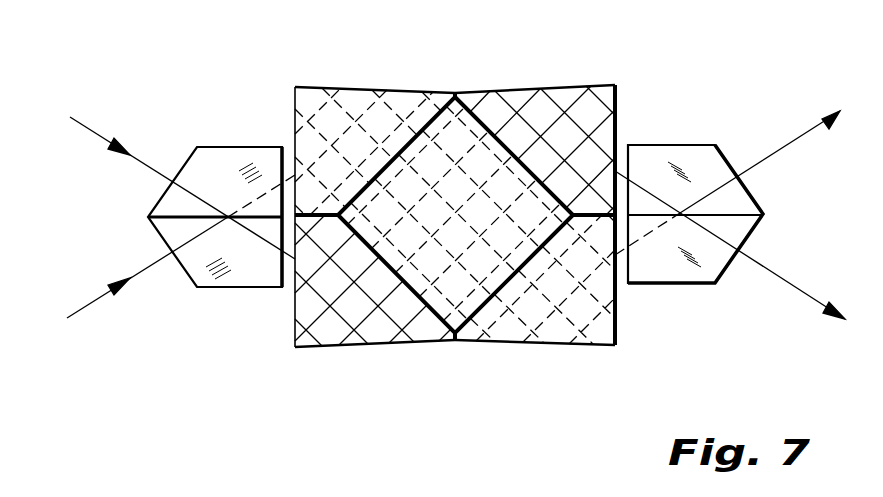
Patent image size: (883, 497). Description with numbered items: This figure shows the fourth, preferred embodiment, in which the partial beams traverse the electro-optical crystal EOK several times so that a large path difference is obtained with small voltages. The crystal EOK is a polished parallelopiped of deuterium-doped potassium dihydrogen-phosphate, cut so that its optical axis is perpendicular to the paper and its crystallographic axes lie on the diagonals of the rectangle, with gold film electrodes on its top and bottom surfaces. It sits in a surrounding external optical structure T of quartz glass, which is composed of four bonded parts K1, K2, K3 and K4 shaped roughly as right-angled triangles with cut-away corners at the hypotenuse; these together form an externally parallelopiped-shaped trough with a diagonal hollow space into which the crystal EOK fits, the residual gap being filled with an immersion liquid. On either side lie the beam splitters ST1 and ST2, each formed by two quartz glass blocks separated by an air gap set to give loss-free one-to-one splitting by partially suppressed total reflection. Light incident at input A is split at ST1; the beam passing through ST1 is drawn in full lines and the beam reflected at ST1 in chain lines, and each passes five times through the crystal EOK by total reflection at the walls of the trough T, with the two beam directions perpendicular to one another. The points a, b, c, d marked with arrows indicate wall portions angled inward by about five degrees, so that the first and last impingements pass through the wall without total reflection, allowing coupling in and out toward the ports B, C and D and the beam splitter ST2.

The surrounding external optical structure T is at (293, 102).
The first individual part of the optical structure K1 is at (314, 106).
The second individual part of the optical structure K2 is at (592, 118).
The third individual part of the optical structure K3 is at (597, 322).
The fourth individual part of the optical structure K4 is at (318, 325).
The electro-optical crystal EOK is at (448, 148).
The arrow-marked point of inwardly angled partial surface a is at (387, 88).
The arrow-marked point of inwardly angled partial surface b is at (531, 88).
The arrow-marked point of inwardly angled partial surface c is at (535, 347).
The arrow-marked point of inwardly angled partial surface d is at (385, 347).
The first beam splitter ST1 is at (185, 233).
The second beam splitter ST2 is at (740, 228).
The input A is at (172, 174).
The beam port B is at (172, 255).
The beam port C is at (739, 253).
The beam port D is at (736, 175).